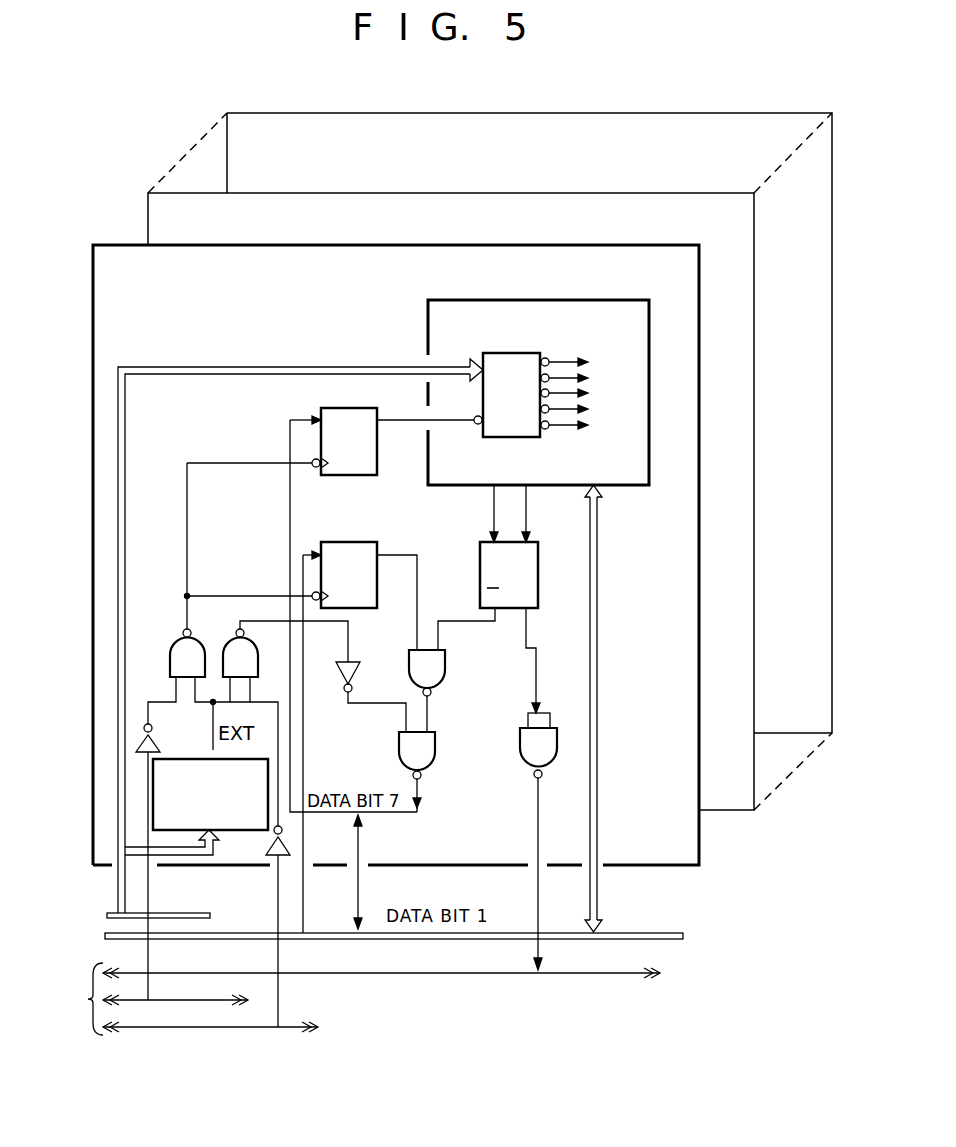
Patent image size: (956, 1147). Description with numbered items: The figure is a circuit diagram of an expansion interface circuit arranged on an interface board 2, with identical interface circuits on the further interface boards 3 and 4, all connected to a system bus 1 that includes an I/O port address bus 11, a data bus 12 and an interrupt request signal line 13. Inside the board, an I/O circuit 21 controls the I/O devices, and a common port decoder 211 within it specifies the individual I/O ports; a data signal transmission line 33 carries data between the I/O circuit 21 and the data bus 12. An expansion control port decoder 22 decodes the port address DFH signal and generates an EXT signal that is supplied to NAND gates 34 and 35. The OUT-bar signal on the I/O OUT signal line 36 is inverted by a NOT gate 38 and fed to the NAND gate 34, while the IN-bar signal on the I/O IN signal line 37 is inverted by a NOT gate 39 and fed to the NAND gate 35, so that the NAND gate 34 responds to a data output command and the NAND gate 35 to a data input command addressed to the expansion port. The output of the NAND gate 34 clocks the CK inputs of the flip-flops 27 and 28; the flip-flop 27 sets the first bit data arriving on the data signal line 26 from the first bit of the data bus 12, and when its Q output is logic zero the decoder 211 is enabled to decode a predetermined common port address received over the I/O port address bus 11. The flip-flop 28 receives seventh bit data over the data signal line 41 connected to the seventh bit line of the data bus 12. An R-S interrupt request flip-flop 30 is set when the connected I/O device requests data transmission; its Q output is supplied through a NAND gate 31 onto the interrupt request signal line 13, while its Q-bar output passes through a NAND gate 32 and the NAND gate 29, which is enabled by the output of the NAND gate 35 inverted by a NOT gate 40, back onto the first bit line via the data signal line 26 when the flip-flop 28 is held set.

The system bus 1 is at (88, 999).
The interface board 2 is at (626, 245).
The interface board 3 is at (673, 193).
The interface board 4 is at (738, 113).
The I/O port address bus 11 is at (180, 913).
The data bus 12 is at (641, 933).
The interrupt request signal line 13 is at (584, 975).
The I/O circuit 21 is at (558, 276).
The common port decoder 211 is at (513, 353).
The expansion control port decoder 22 is at (245, 830).
The data signal line 26 is at (362, 849).
The flip-flop 27 is at (330, 478).
The flip-flop 28 is at (354, 542).
The NAND gate 29 is at (424, 766).
The interrupt request flip-flop 30 is at (540, 578).
The NAND gate 31 is at (530, 748).
The NAND gate 32 is at (434, 668).
The data signal transmission line 33 is at (600, 670).
The NAND gate 34 is at (176, 656).
The NAND gate 35 is at (232, 656).
The I/O OUT signal line 36 is at (246, 977).
The I/O IN signal line 37 is at (310, 1026).
The NOT gate 38 is at (152, 742).
The NOT gate 39 is at (284, 838).
The NOT gate 40 is at (352, 668).
The data signal line 41 is at (305, 746).